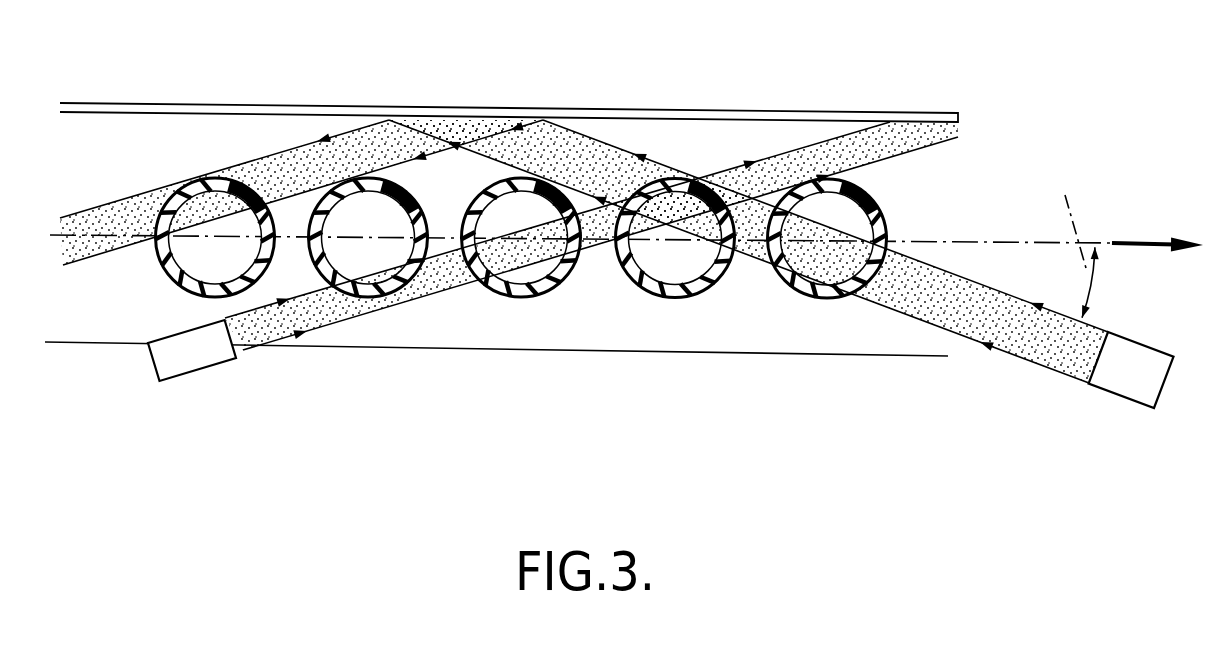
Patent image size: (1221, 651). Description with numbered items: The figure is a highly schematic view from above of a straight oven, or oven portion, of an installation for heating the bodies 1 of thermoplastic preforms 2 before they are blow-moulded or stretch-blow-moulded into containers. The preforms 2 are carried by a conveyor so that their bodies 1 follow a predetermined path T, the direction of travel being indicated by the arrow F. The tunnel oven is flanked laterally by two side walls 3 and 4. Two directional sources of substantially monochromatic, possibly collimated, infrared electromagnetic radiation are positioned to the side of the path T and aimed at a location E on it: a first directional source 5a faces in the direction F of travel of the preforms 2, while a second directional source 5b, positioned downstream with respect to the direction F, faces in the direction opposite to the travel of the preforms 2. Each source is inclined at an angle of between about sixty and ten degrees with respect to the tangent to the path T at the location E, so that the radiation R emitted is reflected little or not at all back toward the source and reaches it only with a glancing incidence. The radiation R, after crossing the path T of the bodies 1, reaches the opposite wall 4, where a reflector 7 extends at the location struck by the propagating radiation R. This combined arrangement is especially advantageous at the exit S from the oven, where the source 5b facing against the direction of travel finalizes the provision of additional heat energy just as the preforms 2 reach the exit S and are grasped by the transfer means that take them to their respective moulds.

The body 1 is at (487, 292).
The thermoplastic preform 2 is at (543, 298).
The side wall 3 is at (918, 357).
The side wall 4 is at (779, 123).
The directional source of electromagnetic radiation 5a is at (190, 357).
The directional source of electromagnetic radiation 5b is at (1120, 375).
The reflector 7 is at (473, 130).
The infrared electromagnetic radiation R is at (323, 305).
The location on the path E is at (818, 248).
The exit from the oven S is at (960, 118).
The path T is at (1073, 221).
The direction of travel F is at (1152, 242).